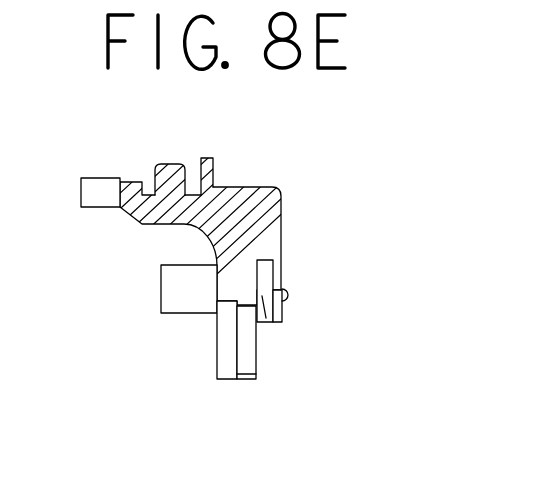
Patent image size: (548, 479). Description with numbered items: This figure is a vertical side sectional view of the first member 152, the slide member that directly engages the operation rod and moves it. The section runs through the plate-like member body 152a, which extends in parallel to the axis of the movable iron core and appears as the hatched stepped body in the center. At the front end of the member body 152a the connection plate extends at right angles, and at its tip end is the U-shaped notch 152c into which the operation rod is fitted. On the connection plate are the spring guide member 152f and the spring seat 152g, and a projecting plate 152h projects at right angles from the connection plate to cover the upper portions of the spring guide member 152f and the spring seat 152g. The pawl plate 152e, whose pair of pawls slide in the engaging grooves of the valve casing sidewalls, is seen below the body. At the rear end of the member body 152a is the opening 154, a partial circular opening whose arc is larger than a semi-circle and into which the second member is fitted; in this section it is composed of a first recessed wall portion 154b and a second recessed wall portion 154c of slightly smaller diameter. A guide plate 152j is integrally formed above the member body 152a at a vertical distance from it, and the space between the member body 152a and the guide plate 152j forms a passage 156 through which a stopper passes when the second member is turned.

The first member 152 is at (202, 242).
The member body 152a is at (240, 273).
The U-shaped notch 152c is at (95, 192).
The pawl plate 152e is at (173, 287).
The spring guide member 152f is at (168, 166).
The spring seat 152g is at (192, 187).
The projecting plate 152h is at (209, 160).
The guide plate 152j is at (276, 280).
The opening 154 is at (230, 359).
The first recessed wall portion 154b is at (238, 306).
The second recessed wall portion 154c is at (243, 318).
The passage 156 is at (262, 292).